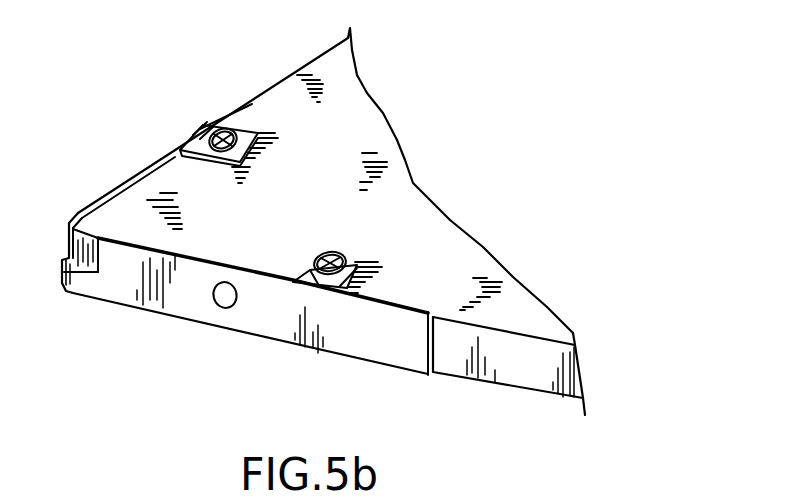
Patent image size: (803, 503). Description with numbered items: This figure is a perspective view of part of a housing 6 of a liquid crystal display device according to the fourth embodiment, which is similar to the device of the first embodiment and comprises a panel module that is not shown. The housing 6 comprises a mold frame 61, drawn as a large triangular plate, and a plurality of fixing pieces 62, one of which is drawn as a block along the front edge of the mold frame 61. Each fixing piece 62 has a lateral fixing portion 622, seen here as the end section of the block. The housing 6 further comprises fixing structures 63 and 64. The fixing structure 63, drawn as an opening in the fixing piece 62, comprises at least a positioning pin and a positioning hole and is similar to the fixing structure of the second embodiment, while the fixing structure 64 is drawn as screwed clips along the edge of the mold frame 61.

The housing 6 is at (319, 222).
The mold frame 61 is at (398, 170).
The fixing piece 62 is at (102, 287).
The lateral fixing portion 622 is at (375, 348).
The fixing structure 63 is at (231, 307).
The fixing structure 64 is at (222, 96).